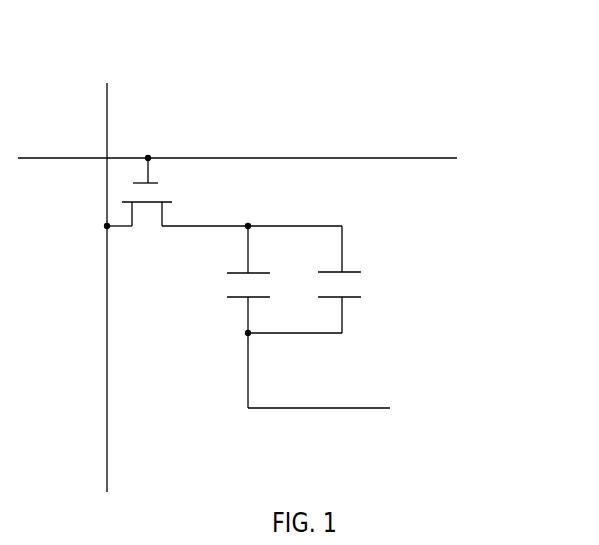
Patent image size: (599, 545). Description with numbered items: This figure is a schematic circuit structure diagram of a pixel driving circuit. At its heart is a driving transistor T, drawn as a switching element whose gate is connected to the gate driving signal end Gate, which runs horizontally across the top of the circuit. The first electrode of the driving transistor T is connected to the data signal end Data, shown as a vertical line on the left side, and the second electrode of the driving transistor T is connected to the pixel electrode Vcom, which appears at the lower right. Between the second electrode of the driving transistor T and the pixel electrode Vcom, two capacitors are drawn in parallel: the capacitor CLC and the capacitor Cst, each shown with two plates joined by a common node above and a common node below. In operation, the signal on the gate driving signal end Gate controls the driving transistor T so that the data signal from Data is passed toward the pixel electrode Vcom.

The data signal end Data is at (111, 256).
The gate driving signal end Gate is at (295, 158).
The driving transistor T is at (177, 217).
The liquid crystal capacitor CLC is at (222, 280).
The storage capacitor Cst is at (332, 279).
The pixel electrode Vcom is at (383, 383).